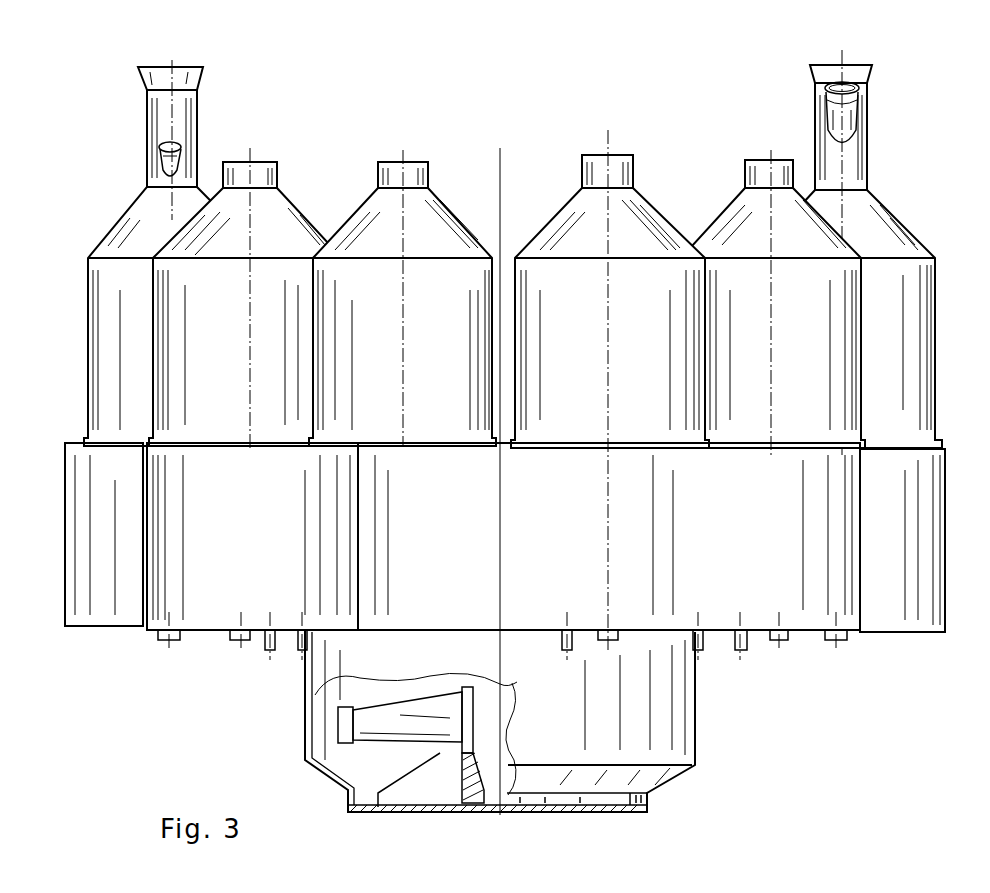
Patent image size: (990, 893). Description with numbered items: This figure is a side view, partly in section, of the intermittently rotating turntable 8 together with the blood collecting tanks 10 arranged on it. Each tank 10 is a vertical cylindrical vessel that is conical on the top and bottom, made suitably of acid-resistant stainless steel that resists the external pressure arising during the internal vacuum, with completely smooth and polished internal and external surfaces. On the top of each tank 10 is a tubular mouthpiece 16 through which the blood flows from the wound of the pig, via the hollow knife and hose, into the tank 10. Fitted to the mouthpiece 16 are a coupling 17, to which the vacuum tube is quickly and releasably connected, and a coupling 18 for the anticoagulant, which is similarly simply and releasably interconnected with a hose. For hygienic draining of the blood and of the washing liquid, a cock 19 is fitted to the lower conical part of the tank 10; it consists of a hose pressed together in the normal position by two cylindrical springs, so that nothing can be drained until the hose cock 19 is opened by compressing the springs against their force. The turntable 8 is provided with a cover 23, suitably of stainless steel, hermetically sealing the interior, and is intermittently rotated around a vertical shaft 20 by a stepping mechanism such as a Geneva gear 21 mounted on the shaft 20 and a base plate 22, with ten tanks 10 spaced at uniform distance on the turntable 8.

The turntable 8 is at (895, 550).
The blood collecting tank 10 is at (895, 370).
The tubular mouthpiece 16 is at (198, 78).
The coupling 17 is at (828, 120).
The coupling 18 is at (156, 168).
The cock 19 is at (841, 642).
The vertical shaft 20 is at (316, 690).
The Geneva gear 21 is at (375, 724).
The base plate 22 is at (326, 785).
The cover 23 is at (672, 783).